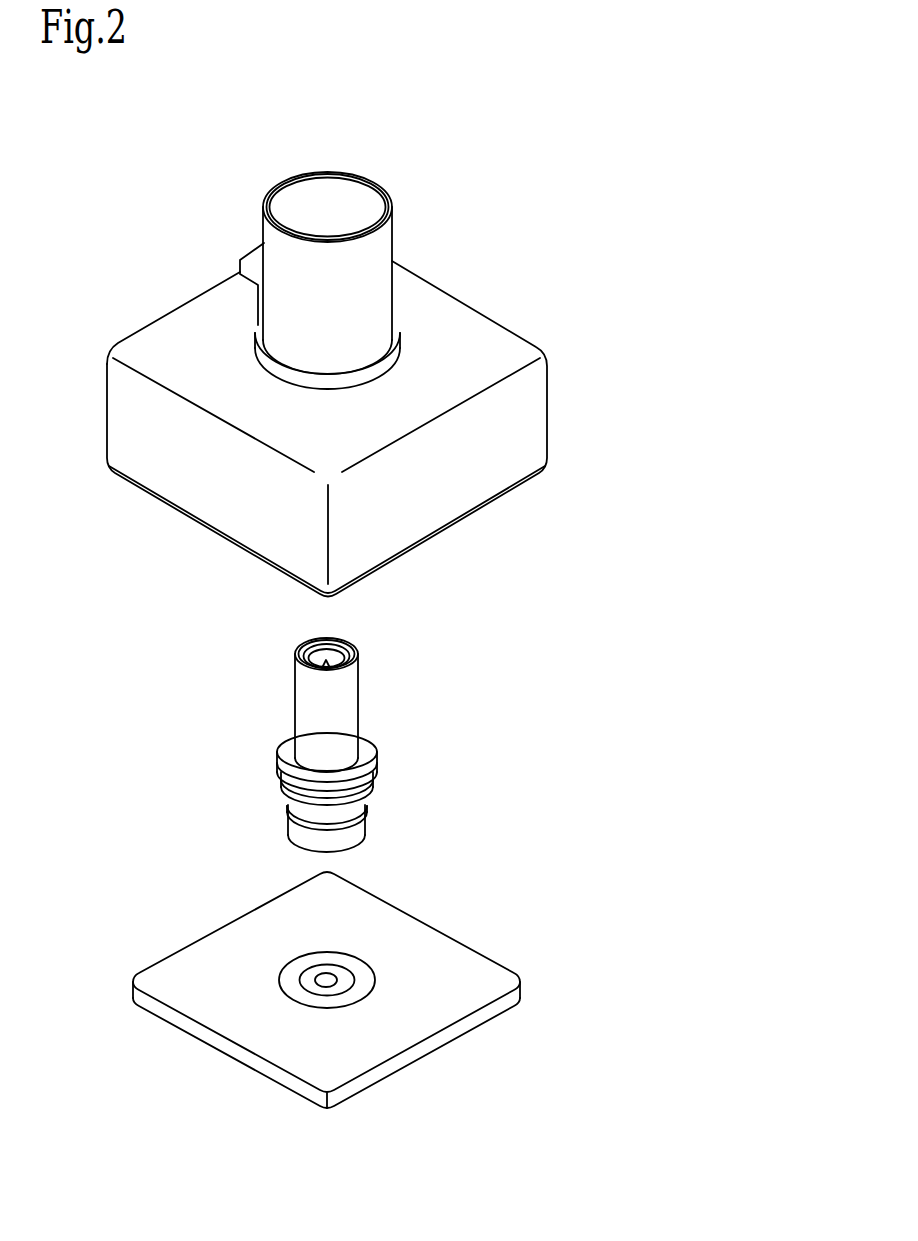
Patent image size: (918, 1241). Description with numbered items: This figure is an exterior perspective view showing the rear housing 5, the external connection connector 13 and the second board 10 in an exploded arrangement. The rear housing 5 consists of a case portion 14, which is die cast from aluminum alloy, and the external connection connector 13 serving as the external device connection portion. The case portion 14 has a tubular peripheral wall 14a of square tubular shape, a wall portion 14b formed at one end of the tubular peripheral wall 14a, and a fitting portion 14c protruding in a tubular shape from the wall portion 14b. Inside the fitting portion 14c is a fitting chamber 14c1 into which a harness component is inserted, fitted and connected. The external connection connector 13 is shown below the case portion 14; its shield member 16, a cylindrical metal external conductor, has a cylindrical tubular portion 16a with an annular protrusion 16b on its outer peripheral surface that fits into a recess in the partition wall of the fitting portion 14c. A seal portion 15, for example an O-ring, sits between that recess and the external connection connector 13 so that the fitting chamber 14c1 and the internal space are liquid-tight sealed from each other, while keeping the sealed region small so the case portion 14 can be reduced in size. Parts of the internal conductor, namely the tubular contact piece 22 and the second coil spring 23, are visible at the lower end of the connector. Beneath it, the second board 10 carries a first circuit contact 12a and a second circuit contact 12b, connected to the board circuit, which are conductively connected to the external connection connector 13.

The rear housing 5 is at (546, 183).
The second board 10 is at (440, 937).
The first circuit contact 12a is at (323, 980).
The second circuit contact 12b is at (363, 981).
The external connection connector 13 is at (365, 665).
The case portion 14 is at (552, 400).
The tubular peripheral wall 14a is at (114, 420).
The wall portion 14b is at (170, 338).
The fitting portion 14c is at (268, 255).
The fitting chamber 14c1 is at (299, 192).
The seal portion 15 is at (369, 754).
The shield member 16 is at (361, 700).
The tubular portion 16a is at (296, 688).
The annular protrusion 16b is at (280, 779).
The tubular contact piece 22 is at (366, 845).
The second coil spring 23 is at (290, 822).